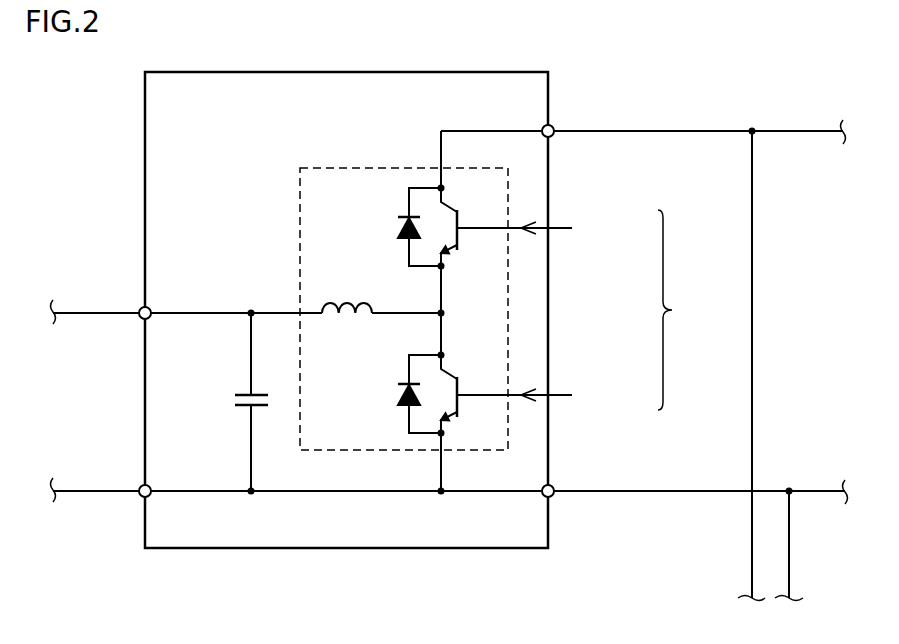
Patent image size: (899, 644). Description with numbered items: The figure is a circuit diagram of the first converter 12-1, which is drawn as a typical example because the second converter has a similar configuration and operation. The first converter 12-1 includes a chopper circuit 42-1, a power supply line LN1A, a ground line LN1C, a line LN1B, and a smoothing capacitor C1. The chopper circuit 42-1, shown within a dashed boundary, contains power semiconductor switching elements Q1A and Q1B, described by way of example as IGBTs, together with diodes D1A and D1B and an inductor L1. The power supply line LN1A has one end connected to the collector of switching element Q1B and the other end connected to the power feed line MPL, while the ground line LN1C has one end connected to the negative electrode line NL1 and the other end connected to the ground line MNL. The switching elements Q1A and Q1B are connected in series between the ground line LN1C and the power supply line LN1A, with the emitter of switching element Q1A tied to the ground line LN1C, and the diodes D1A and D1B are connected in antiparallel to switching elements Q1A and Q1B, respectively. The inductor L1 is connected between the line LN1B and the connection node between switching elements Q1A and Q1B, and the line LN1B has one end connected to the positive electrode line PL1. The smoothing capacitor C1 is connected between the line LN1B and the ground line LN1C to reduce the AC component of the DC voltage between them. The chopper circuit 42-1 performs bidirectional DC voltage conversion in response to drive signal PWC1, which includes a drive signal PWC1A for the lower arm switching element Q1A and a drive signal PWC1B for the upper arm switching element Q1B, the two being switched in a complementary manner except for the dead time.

The first converter 12-1 is at (527, 72).
The chopper circuit 42-1 is at (330, 168).
The power semiconductor switching element Q1A is at (468, 393).
The power semiconductor switching element Q1B is at (468, 225).
The diode D1A is at (400, 394).
The diode D1B is at (400, 227).
The inductor L1 is at (347, 295).
The smoothing capacitor C1 is at (243, 393).
The positive electrode line PL1 is at (88, 311).
The negative electrode line NL1 is at (90, 489).
The power feed line MPL is at (820, 130).
The ground line MNL is at (820, 490).
The power supply line LN1A is at (642, 146).
The line LN1B is at (293, 300).
The ground line LN1C is at (346, 462).
The drive signal PWC1A is at (554, 395).
The drive signal PWC1B is at (554, 228).
The drive signal PWC1 is at (696, 310).